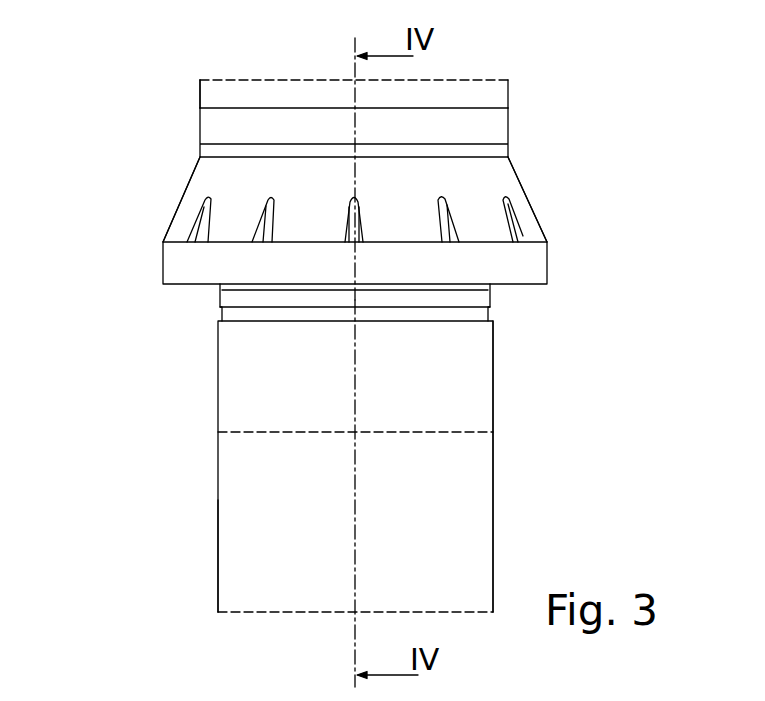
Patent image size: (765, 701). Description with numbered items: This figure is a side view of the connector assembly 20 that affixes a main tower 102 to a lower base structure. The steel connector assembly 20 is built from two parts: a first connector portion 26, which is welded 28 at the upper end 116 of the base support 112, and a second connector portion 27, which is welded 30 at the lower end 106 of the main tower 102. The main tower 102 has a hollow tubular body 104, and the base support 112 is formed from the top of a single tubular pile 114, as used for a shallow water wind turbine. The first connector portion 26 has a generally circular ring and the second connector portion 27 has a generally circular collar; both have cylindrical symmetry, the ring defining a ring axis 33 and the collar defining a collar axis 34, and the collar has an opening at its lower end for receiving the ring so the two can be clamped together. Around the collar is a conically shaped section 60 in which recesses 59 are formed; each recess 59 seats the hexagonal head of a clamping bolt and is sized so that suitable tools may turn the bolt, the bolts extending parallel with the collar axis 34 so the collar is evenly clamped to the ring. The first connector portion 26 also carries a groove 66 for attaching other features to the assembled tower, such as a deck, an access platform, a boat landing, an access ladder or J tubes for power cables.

The connector assembly 20 is at (526, 152).
The first connector portion 26 is at (200, 365).
The second connector portion 27 is at (170, 192).
The weld 28 is at (246, 430).
The weld 30 is at (228, 109).
The ring axis 33 is at (357, 572).
The collar axis 34 is at (352, 64).
The recess 59 is at (455, 228).
The conically shaped section 60 is at (513, 192).
The groove 66 is at (494, 310).
The main tower 102 is at (519, 83).
The hollow tubular body 104 is at (497, 92).
The lower end 106 is at (210, 88).
The base support 112 is at (216, 563).
The tubular pile 114 is at (506, 490).
The upper end 116 is at (246, 492).